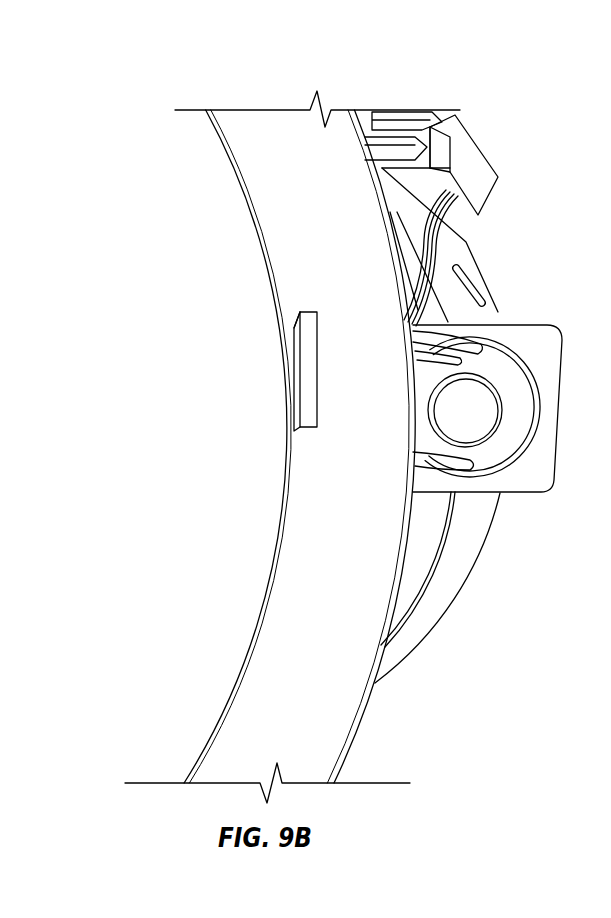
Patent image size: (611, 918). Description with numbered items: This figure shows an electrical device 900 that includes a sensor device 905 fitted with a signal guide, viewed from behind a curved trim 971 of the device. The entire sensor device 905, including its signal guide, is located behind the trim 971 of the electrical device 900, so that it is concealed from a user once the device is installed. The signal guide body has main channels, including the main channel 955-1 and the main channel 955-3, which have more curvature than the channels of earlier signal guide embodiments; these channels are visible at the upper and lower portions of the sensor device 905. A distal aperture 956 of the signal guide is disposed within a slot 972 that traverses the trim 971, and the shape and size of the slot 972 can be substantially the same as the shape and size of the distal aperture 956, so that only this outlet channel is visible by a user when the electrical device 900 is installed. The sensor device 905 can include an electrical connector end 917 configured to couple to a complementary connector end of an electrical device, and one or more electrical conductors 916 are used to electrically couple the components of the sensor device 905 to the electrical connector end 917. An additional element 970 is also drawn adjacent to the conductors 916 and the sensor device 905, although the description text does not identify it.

The electrical device 900 is at (503, 66).
The trim 971 is at (283, 137).
The slot 972 is at (297, 323).
The distal aperture 956 is at (298, 405).
The electrical conductors 916 is at (428, 233).
The electrical connector end 917 is at (480, 158).
The bracket 970 is at (457, 256).
The main channel 955-1 is at (484, 347).
The main channel 955-3 is at (440, 462).
The sensor device 905 is at (533, 500).